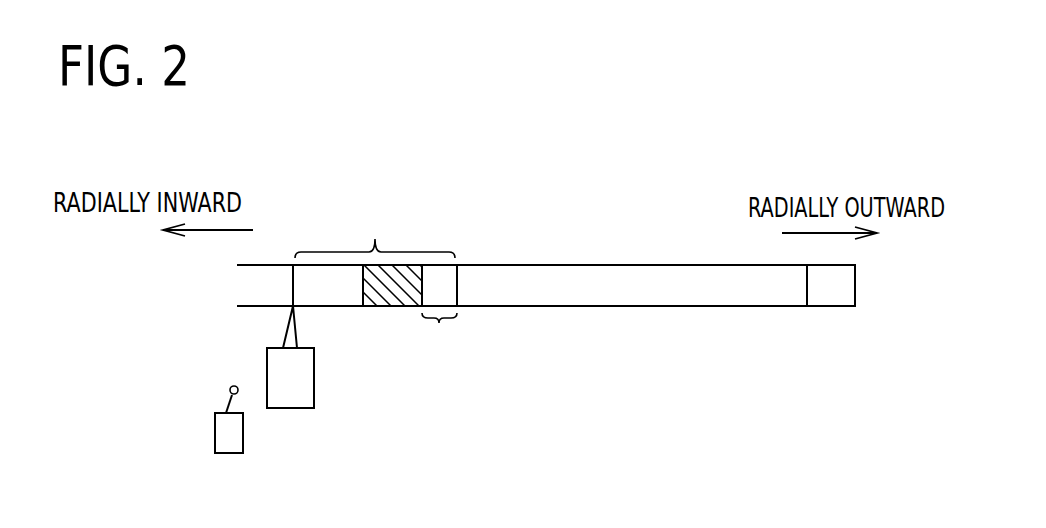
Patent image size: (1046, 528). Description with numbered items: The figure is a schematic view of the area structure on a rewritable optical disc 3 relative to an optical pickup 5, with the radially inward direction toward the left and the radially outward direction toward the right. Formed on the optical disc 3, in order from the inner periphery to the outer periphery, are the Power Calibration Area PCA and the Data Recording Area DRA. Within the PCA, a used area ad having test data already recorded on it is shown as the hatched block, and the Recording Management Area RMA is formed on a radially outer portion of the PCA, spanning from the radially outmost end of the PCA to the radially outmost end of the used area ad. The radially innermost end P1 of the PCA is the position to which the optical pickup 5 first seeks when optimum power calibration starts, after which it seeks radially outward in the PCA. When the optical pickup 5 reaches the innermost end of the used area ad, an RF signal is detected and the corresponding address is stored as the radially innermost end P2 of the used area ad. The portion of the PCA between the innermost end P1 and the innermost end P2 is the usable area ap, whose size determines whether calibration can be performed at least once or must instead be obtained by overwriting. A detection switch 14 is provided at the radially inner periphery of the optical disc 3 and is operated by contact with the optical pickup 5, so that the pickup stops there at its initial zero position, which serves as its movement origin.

The optical disc 3 is at (658, 228).
The optical pickup 5 is at (288, 397).
The detection switch 14 is at (222, 438).
The radially innermost end of PCA P1 is at (300, 229).
The radially innermost end of used area P2 is at (368, 333).
The Power Calibration Area PCA is at (375, 233).
The Recording Management Area RMA is at (440, 313).
The Data Recording Area DRA is at (626, 286).
The used area ad is at (399, 298).
The usable area ap is at (327, 307).